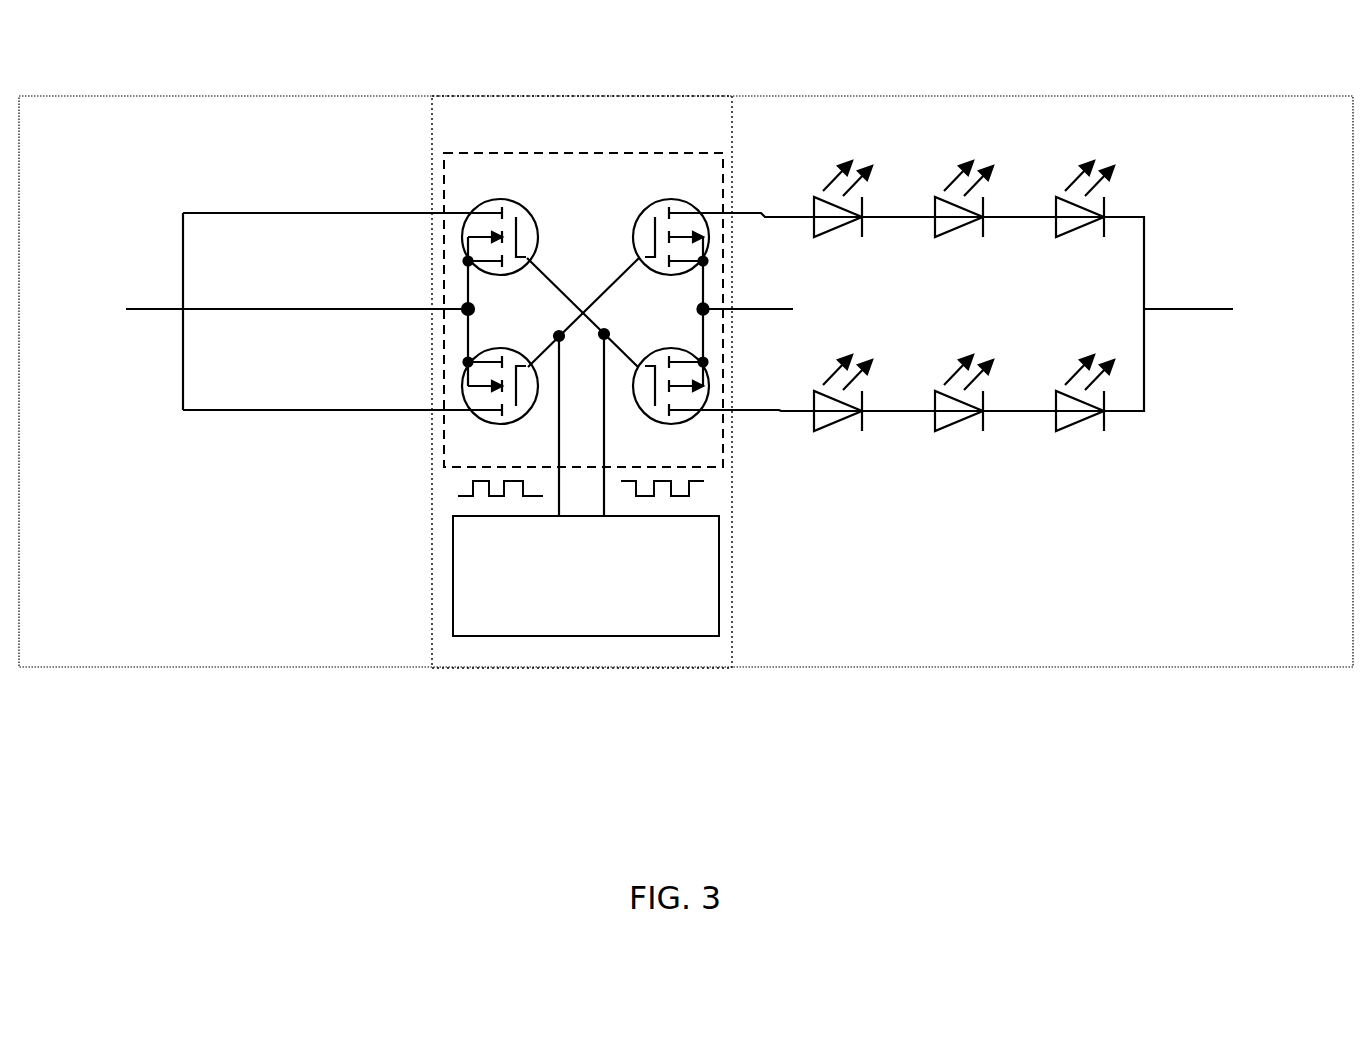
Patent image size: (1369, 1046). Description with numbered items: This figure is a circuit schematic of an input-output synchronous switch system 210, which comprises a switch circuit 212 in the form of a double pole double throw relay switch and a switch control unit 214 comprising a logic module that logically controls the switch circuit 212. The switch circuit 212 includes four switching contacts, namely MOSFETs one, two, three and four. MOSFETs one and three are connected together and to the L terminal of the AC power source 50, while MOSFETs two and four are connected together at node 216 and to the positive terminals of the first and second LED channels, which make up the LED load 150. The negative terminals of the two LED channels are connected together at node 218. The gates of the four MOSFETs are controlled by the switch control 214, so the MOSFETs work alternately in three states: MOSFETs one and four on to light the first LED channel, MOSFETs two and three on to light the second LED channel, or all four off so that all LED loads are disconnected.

The AC power source 50 is at (95, 264).
The LED strings LED1 and LED2 150 is at (1004, 144).
The input-output synchronous switch system 210 is at (537, 60).
The switch circuit 212 is at (425, 171).
The switch control unit 214 is at (549, 628).
The connection point of MOSFETs 2, 4 216 is at (698, 295).
The connection point of LED channel negative terminals 218 is at (1190, 291).